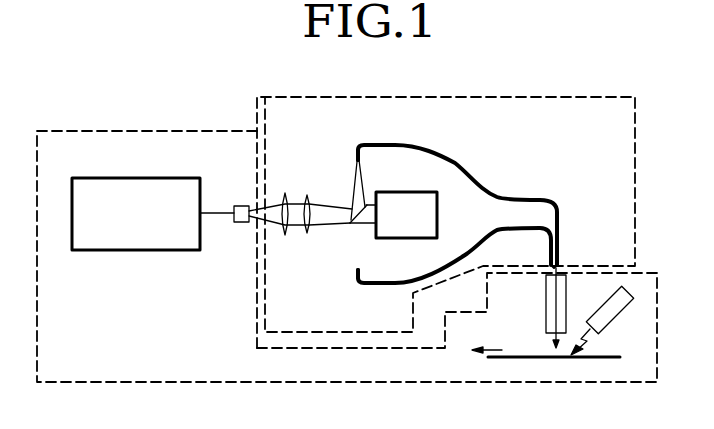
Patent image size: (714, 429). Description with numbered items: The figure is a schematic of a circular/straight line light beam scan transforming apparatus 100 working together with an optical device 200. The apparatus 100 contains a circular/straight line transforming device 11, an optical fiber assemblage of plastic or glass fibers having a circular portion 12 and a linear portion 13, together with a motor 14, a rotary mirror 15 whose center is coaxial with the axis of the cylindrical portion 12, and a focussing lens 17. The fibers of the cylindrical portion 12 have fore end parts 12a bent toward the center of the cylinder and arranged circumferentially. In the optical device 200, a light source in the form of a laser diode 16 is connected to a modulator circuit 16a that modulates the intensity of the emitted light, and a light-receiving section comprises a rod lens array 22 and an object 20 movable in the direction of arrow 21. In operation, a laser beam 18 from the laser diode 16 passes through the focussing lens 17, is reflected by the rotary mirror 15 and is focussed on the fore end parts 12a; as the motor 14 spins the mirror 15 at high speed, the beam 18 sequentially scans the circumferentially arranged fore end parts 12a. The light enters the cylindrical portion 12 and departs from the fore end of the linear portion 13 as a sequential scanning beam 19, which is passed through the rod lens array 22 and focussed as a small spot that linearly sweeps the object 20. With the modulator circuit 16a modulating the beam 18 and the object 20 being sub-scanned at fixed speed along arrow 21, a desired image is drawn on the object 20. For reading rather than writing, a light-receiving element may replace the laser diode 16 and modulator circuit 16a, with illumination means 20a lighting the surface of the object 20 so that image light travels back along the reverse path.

The circular/straight line light beam scan transforming apparatus 100 is at (560, 97).
The optical device 200 is at (460, 384).
The circular/straight line transforming device 11 is at (521, 153).
The circular portion 12 is at (358, 147).
The fore end part 12a is at (358, 152).
The linear portion 13 is at (558, 262).
The motor 14 is at (414, 235).
The rotary mirror 15 is at (362, 228).
The laser diode 16 is at (242, 224).
The modulator circuit 16a is at (162, 246).
The focussing lens 17 is at (311, 239).
The laser beam 18 is at (353, 192).
The scanning beam 19 is at (558, 270).
The object 20 is at (605, 357).
The illumination means 20a is at (628, 297).
The arrow 21 is at (492, 350).
The rod lens array 22 is at (566, 312).